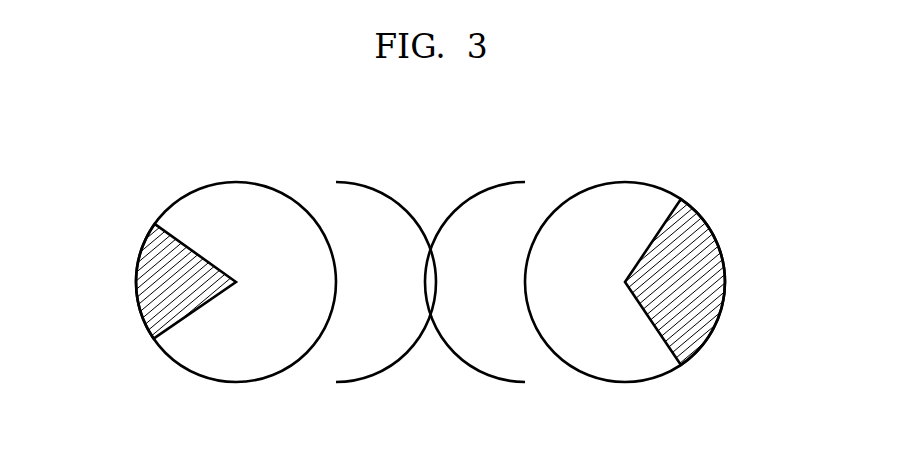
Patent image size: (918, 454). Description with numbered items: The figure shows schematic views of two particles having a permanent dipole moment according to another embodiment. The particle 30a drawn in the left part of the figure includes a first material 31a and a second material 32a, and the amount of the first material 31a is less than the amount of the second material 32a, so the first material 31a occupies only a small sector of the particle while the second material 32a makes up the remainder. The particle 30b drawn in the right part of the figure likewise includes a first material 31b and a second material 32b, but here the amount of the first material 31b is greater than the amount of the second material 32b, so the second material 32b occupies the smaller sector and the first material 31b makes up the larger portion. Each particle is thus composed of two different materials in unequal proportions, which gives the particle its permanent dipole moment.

The particle 30a is at (327, 194).
The first material 31a is at (140, 280).
The second material 32a is at (332, 280).
The particle 30b is at (717, 194).
The first material 31b is at (530, 280).
The second material 32b is at (720, 280).